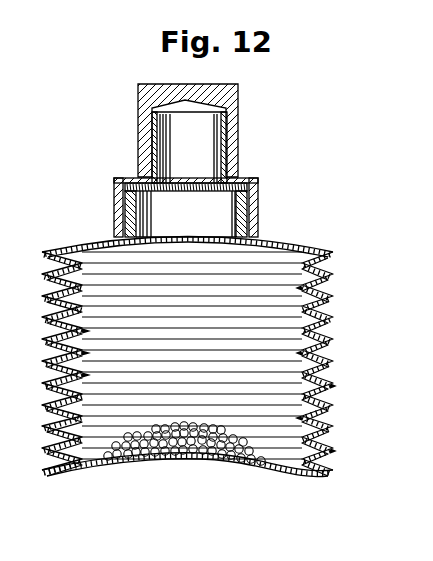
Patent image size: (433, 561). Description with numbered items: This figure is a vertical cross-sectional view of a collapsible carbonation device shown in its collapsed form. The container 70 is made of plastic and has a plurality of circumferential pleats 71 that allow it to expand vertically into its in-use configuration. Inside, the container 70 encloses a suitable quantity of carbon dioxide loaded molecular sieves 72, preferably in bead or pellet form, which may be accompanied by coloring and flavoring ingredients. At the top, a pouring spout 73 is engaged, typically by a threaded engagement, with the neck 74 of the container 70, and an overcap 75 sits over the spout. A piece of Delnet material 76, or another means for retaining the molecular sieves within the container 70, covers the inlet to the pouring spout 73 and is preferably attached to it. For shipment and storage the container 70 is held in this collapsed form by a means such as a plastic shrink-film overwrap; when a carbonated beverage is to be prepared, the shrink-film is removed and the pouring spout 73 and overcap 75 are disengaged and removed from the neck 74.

The container 70 is at (357, 260).
The circumferential pleats 71 is at (340, 378).
The carbon dioxide loaded molecular sieves 72 is at (207, 460).
The pouring spout 73 is at (257, 181).
The neck 74 is at (240, 216).
The overcap 75 is at (238, 88).
The Delnet material 76 is at (200, 182).